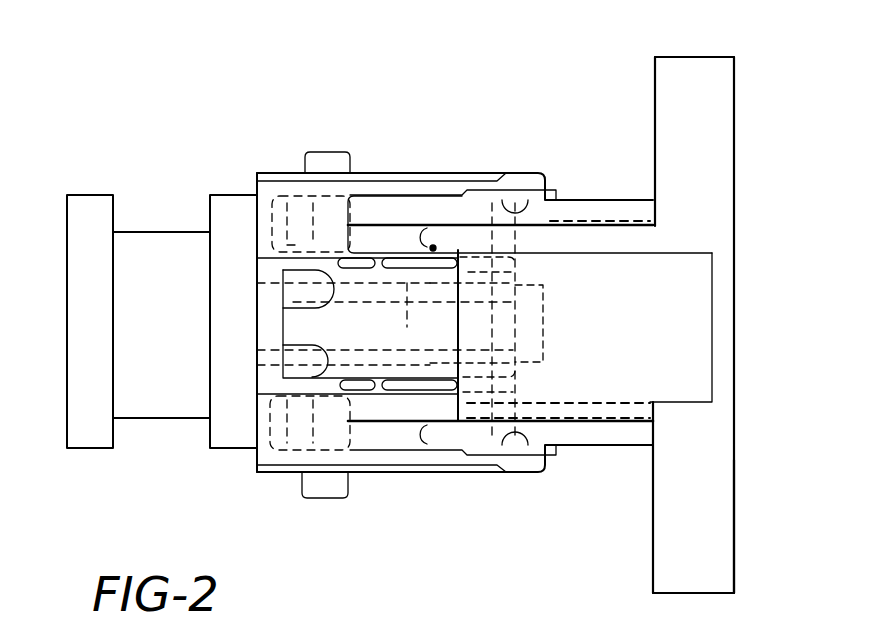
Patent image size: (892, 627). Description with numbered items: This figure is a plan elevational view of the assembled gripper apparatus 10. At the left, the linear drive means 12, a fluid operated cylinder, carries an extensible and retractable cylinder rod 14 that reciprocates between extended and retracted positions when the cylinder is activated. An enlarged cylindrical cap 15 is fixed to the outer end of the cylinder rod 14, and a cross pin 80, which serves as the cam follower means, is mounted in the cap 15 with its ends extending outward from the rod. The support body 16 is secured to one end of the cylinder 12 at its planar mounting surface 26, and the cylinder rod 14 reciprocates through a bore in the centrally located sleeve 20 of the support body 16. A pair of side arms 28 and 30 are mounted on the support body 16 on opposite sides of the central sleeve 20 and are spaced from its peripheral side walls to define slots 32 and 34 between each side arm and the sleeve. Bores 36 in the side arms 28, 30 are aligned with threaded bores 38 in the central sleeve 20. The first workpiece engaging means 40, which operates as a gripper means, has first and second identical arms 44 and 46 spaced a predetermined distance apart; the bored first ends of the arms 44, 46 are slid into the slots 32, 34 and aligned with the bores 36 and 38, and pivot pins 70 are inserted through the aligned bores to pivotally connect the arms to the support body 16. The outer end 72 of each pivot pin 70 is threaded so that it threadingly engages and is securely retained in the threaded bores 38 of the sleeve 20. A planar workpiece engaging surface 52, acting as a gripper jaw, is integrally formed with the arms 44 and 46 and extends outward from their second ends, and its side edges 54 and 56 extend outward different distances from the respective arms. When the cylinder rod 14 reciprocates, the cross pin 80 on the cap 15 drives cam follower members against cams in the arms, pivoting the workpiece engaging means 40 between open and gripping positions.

The apparatus 10 is at (156, 148).
The linear drive means 12 is at (123, 193).
The linear drive member 14 is at (399, 332).
The cylindrical cap 15 is at (518, 286).
The support body 16 is at (268, 172).
The central sleeve 20 is at (433, 245).
The planar mounting surface 26 is at (257, 193).
The side arm 28 is at (520, 460).
The side arm 30 is at (400, 183).
The slot 32 is at (553, 450).
The slot 34 is at (527, 205).
The bore 36 is at (328, 150).
The threaded bore 38 is at (300, 306).
The first workpiece engaging means 40 is at (743, 193).
The first arm 44 is at (563, 237).
The second arm 46 is at (605, 210).
The workpiece engaging surface 52 is at (711, 547).
The side edge 54 is at (683, 52).
The side edge 56 is at (705, 593).
The pivot pin 70 is at (350, 161).
The outer end of pivot pin 72 is at (305, 394).
The cross pin 80 is at (522, 350).